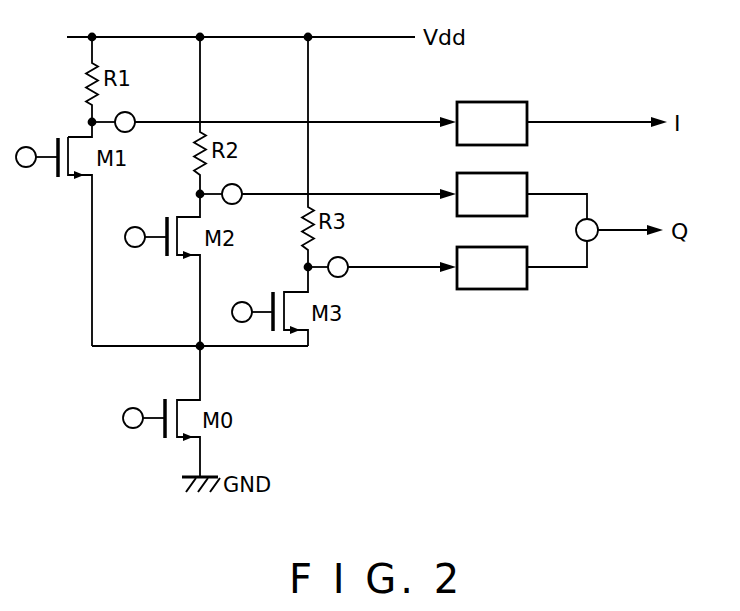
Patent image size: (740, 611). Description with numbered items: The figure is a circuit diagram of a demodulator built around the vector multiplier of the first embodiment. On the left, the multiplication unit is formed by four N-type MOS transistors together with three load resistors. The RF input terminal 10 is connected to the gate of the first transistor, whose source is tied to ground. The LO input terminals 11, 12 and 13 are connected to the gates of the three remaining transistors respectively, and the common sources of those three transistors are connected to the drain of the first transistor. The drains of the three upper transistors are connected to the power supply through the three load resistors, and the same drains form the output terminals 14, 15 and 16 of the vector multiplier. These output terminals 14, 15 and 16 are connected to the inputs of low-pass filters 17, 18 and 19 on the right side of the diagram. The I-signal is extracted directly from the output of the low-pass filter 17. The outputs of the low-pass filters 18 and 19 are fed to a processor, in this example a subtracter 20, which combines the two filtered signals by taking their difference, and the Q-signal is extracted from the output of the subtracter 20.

The RF input terminal 10 is at (133, 428).
The LO input terminal 11 is at (26, 167).
The LO input terminal 12 is at (132, 247).
The LO input terminal 13 is at (246, 302).
The output terminal 14 is at (133, 115).
The output terminal 15 is at (240, 187).
The output terminal 16 is at (346, 260).
The low-pass filter 17 is at (505, 102).
The low-pass filter 18 is at (505, 173).
The low-pass filter 19 is at (505, 247).
The subtracter 20 is at (590, 241).